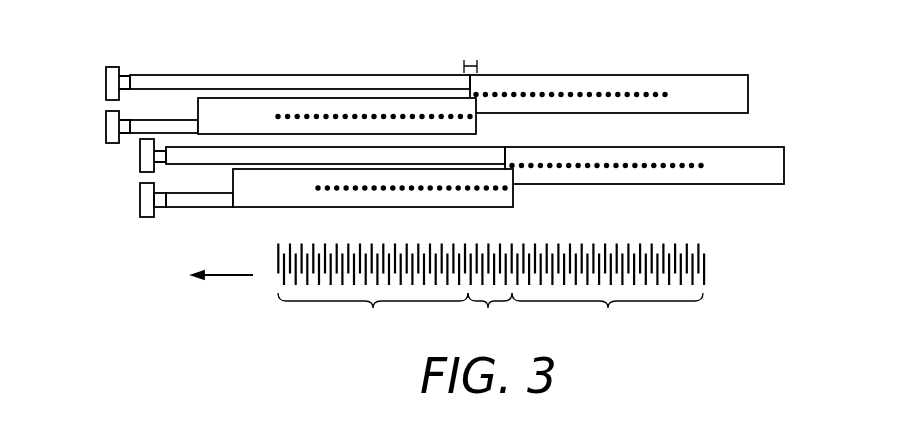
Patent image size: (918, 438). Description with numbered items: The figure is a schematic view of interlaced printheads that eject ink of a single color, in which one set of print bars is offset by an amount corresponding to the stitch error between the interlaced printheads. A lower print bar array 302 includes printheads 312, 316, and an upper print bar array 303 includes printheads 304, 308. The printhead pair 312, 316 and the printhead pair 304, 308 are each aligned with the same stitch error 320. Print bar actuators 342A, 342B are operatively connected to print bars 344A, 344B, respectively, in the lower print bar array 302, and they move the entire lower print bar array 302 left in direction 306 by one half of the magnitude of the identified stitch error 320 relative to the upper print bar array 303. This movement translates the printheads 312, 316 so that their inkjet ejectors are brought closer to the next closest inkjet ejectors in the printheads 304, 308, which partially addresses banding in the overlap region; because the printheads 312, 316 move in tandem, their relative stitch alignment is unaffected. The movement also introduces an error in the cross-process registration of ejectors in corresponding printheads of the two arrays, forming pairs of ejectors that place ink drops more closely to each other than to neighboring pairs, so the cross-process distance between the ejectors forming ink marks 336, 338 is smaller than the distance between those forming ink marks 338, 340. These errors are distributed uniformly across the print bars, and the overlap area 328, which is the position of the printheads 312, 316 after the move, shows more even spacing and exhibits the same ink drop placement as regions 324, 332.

The lower print bar array 302 is at (419, 213).
The upper print bar array 303 is at (469, 78).
The printhead 304 is at (358, 98).
The direction 306 is at (218, 278).
The printhead 308 is at (612, 113).
The printhead 312 is at (334, 207).
The printhead 316 is at (645, 185).
The stitch error 320 is at (470, 60).
The region 324 is at (373, 290).
The overlap area 328 is at (490, 290).
The region 332 is at (632, 272).
The ink mark 336 is at (703, 267).
The ink mark 338 is at (704, 250).
The ink mark 340 is at (692, 250).
The print bar actuator 342A is at (140, 167).
The print bar actuator 342B is at (140, 210).
The print bar 344A is at (170, 164).
The print bar 344B is at (170, 207).